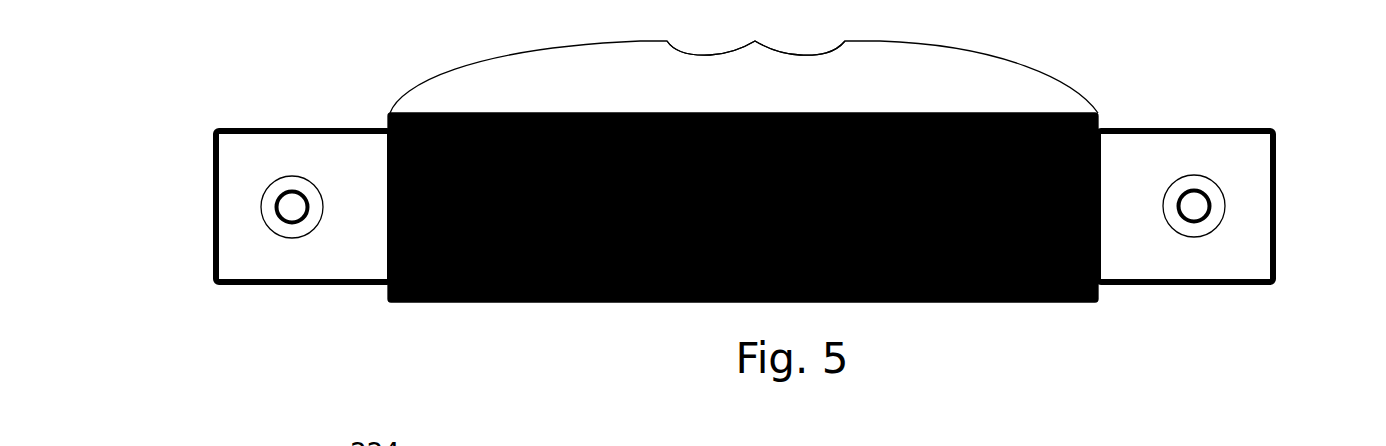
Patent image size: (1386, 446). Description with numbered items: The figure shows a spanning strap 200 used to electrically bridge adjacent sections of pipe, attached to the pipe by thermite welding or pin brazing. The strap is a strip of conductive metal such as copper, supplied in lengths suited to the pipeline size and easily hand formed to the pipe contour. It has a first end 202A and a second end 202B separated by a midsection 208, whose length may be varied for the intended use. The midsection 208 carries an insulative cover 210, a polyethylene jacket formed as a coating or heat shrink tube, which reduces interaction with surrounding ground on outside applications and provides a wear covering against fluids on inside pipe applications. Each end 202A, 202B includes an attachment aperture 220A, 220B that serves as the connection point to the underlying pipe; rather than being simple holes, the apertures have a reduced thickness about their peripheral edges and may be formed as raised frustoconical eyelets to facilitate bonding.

The spanning strap 200 is at (584, 325).
The first end 202A is at (284, 257).
The second end 202B is at (1255, 265).
The midsection 208 is at (756, 32).
The insulative cover 210 is at (740, 70).
The attachment aperture 220A is at (282, 183).
The attachment aperture 220B is at (1213, 192).